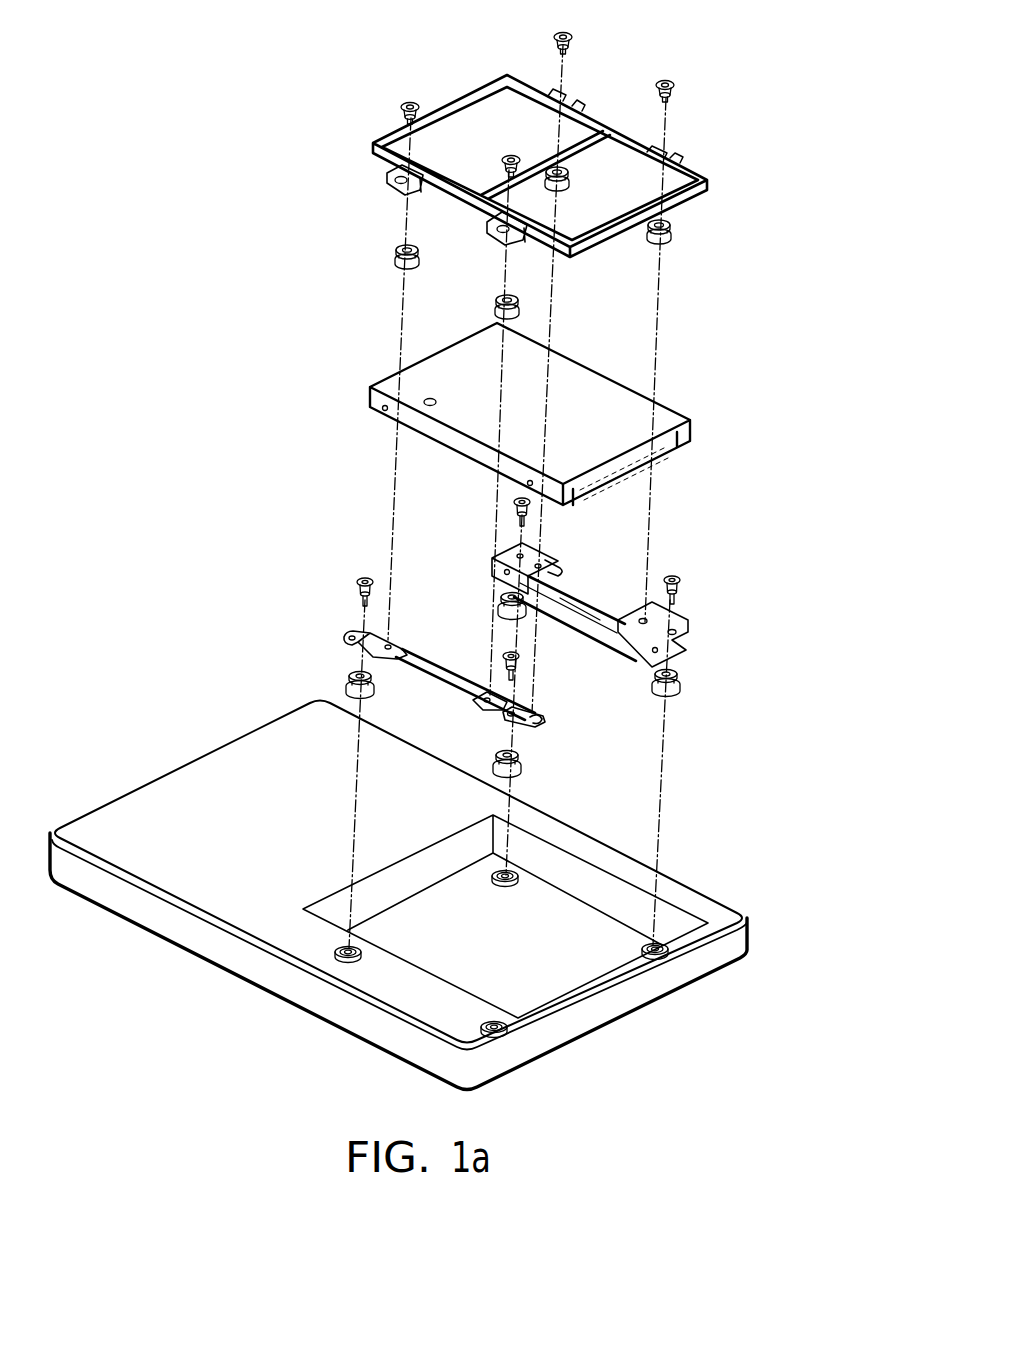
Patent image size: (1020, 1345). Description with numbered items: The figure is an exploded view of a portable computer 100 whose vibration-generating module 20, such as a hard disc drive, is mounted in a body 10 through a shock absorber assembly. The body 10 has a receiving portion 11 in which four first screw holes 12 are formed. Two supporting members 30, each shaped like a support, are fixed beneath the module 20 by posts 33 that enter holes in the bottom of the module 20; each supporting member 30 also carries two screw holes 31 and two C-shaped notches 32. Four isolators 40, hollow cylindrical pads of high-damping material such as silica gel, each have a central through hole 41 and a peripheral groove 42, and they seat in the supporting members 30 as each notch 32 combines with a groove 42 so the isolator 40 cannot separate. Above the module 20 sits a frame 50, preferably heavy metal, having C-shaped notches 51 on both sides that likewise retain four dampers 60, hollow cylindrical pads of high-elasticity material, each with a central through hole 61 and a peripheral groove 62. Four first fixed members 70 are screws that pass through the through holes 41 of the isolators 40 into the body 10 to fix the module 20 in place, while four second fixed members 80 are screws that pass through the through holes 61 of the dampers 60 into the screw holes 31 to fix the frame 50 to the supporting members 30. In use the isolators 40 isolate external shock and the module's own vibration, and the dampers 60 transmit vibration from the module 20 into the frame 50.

The portable computer 100 is at (198, 97).
The body 10 is at (187, 743).
The receiving portion 11 is at (574, 970).
The first screw holes 12 is at (512, 873).
The module 20 is at (684, 407).
The supporting members 30 is at (590, 582).
The screw holes 31 is at (526, 556).
The notches 32 is at (506, 718).
The posts 33 is at (636, 658).
The isolators 40 is at (502, 604).
The through hole 41 is at (684, 676).
The groove 42 is at (684, 686).
The frame 50 is at (716, 181).
The notches 51 is at (496, 237).
The dampers 60 is at (667, 247).
The through hole 61 is at (676, 228).
The groove 62 is at (681, 237).
The first fixed members 70 is at (514, 508).
The second fixed members 80 is at (403, 112).